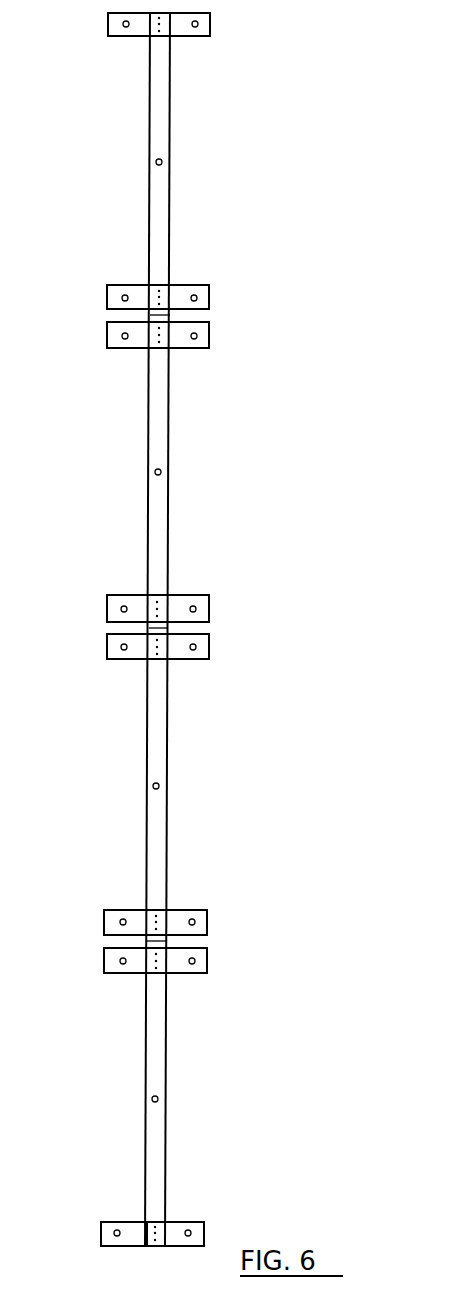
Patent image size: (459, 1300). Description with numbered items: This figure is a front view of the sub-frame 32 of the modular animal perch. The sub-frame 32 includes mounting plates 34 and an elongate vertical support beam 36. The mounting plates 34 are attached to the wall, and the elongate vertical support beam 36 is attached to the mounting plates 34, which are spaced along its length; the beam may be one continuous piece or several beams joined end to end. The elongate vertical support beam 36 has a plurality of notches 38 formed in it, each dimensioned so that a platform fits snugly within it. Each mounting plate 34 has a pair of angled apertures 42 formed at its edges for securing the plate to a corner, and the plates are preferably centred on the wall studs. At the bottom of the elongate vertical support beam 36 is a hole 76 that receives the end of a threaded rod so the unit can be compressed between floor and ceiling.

The sub-frame 32 is at (205, 165).
The mounting plates 34 is at (108, 298).
The elongate vertical support beam 36 is at (150, 194).
The notches 38 is at (163, 315).
The angled apertures 42 is at (126, 24).
The hole 76 is at (143, 1222).